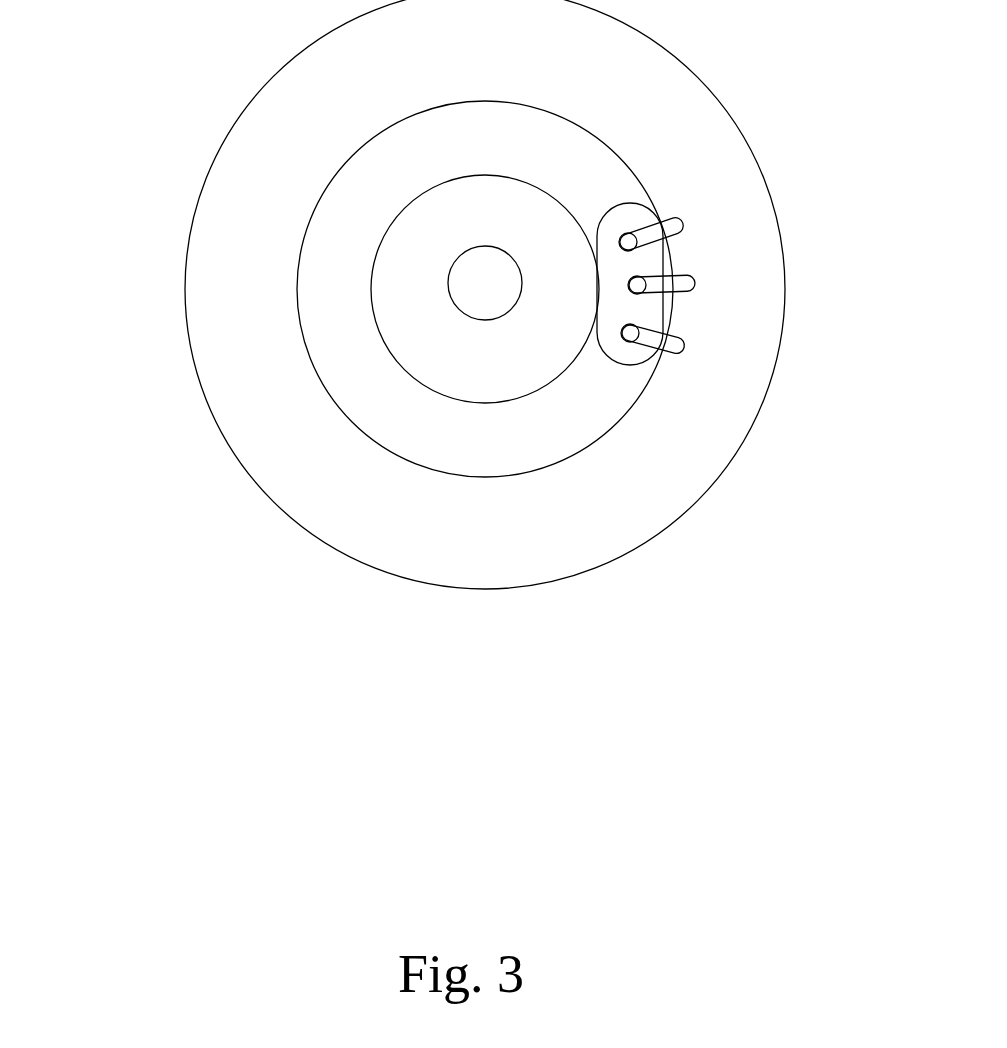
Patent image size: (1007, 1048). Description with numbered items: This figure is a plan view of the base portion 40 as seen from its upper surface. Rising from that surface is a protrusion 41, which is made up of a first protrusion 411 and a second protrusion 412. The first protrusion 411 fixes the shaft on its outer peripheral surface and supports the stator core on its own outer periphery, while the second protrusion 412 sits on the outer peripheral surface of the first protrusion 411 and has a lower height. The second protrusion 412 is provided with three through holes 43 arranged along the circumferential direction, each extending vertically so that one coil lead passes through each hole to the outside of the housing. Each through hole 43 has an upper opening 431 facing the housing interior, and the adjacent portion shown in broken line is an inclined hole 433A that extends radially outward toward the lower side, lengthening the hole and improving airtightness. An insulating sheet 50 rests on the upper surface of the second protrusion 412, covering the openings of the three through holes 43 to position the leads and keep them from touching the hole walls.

The base portion 40 is at (195, 182).
The protrusion 41 is at (163, 449).
The first protrusion 411 is at (403, 308).
The second protrusion 412 is at (315, 280).
The through hole 43 is at (555, 461).
The upper opening 431 is at (444, 476).
The inclined hole 433A is at (677, 223).
The insulating sheet 50 is at (625, 355).